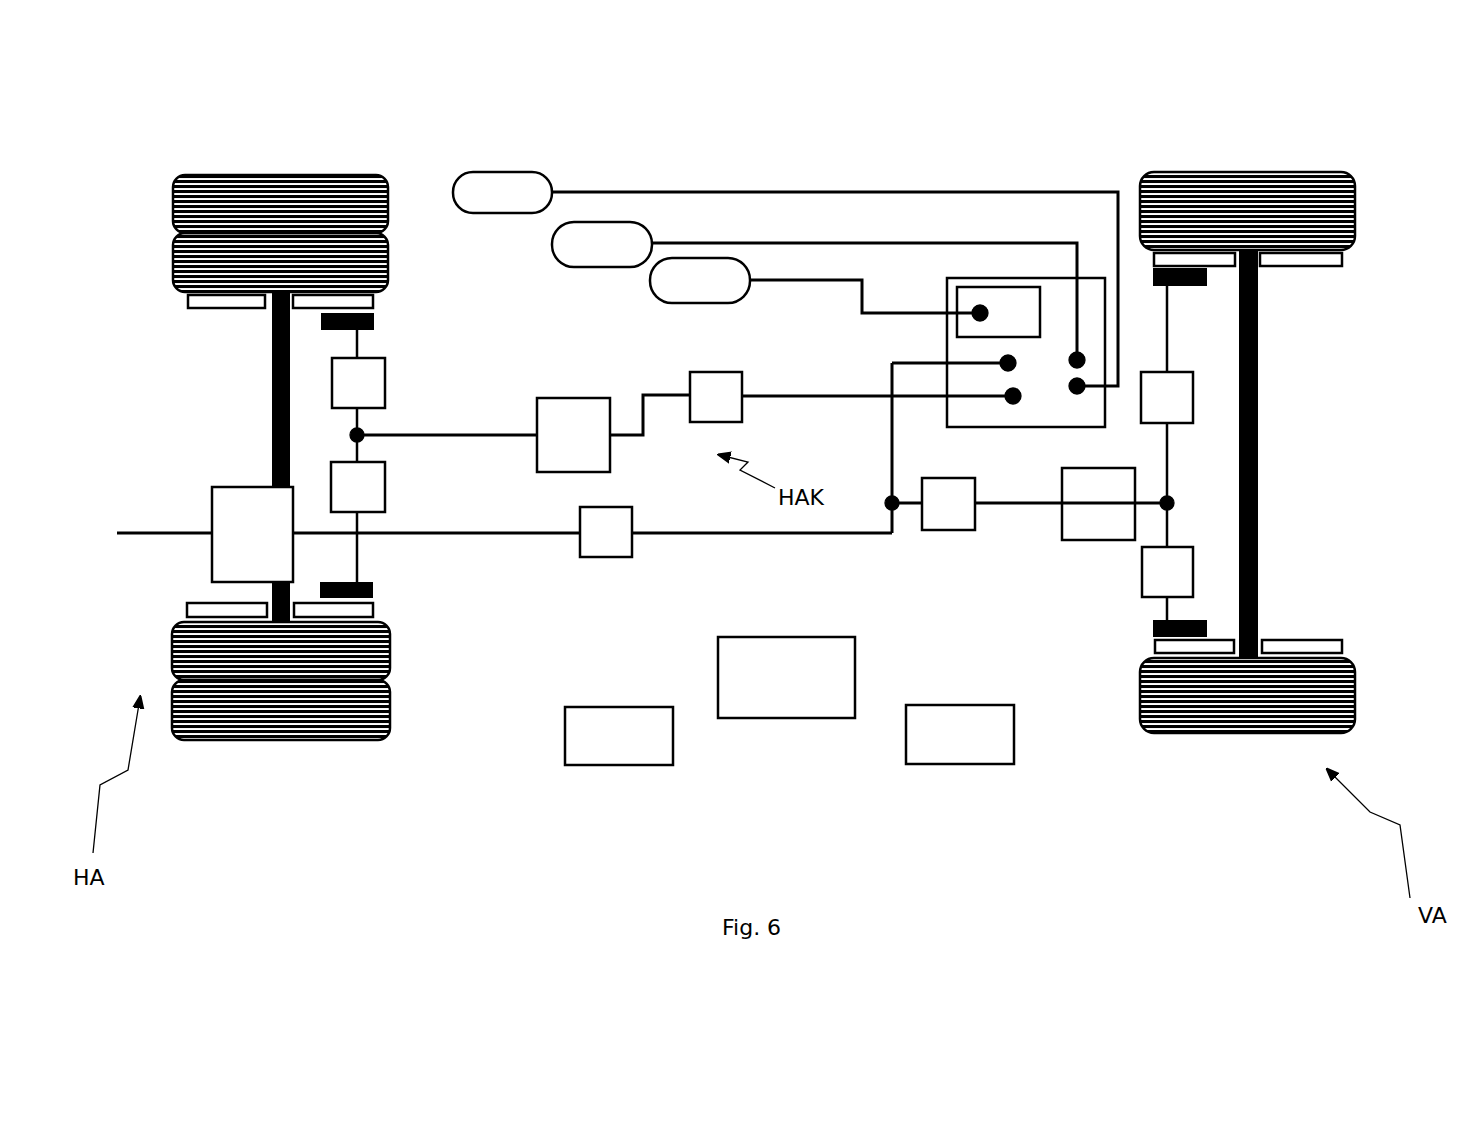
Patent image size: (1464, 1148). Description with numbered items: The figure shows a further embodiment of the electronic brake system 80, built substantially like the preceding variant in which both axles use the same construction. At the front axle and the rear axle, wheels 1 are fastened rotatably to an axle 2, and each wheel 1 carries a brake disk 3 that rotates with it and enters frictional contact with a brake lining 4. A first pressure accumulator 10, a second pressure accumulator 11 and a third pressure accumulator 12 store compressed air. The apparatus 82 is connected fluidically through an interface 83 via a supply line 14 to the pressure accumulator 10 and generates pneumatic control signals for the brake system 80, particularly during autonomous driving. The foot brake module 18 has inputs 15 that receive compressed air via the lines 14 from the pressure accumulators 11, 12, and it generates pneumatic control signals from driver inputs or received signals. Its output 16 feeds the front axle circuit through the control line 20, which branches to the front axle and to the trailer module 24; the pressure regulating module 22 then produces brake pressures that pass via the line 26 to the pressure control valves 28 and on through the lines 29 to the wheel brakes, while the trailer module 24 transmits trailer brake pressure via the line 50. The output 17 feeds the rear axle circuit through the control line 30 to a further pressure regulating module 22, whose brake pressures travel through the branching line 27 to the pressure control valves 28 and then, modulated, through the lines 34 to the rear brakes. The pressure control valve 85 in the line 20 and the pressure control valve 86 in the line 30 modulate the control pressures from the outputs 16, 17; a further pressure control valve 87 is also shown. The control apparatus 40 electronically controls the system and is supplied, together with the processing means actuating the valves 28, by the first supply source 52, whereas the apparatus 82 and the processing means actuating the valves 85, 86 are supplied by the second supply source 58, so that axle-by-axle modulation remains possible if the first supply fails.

The wheel 1 is at (262, 178).
The axle 2 is at (272, 380).
The brake disk 3 is at (210, 305).
The brake lining 4 is at (325, 330).
The first pressure accumulator 10 is at (650, 285).
The second pressure accumulator 11 is at (622, 222).
The third pressure accumulator 12 is at (515, 172).
The supply line 14 is at (790, 278).
The input of foot brake module 15 is at (1075, 352).
The output of foot brake module 16 is at (1000, 360).
The output of foot brake module 17 is at (1010, 404).
The foot brake module 18 is at (1060, 427).
The control line 20 is at (890, 450).
The pressure regulating module 22 is at (598, 398).
The trailer module 24 is at (212, 505).
The line 26 is at (1174, 504).
The line 27 is at (400, 435).
The pressure control valve 28 is at (385, 385).
The line 29 is at (1168, 300).
The control line 30 is at (628, 438).
The line 34 is at (360, 348).
The control apparatus 40 is at (780, 718).
The line 50 is at (117, 533).
The first supply source 52 is at (1003, 764).
The second supply source 58 is at (585, 765).
The electronic brake system 80 is at (457, 763).
The apparatus 82 is at (998, 312).
The interface 83 is at (972, 308).
The pressure control valve 85 is at (940, 530).
The pressure control valve 86 is at (748, 372).
The pressure control valve 87 is at (600, 557).